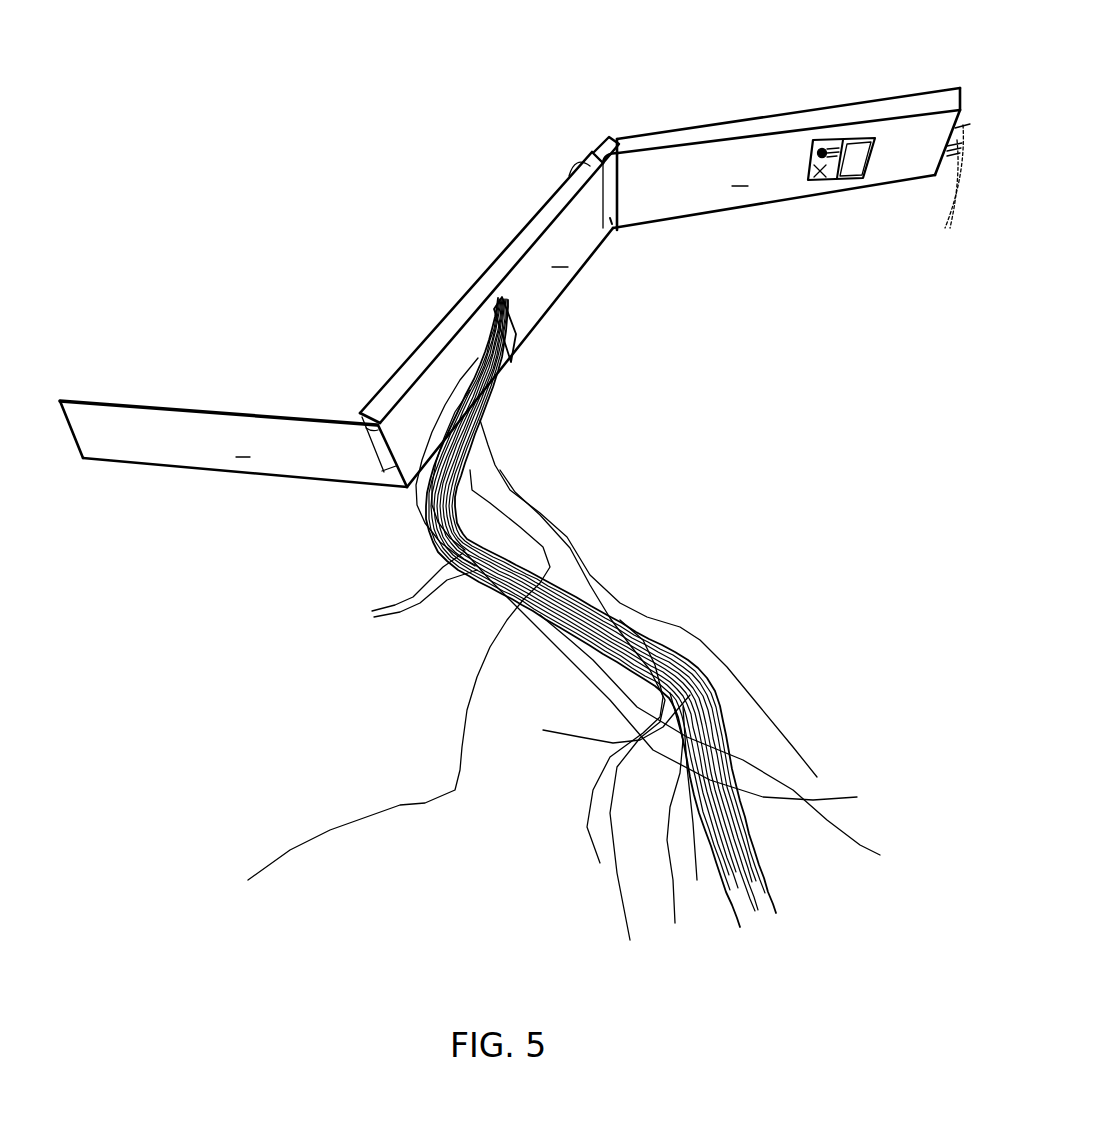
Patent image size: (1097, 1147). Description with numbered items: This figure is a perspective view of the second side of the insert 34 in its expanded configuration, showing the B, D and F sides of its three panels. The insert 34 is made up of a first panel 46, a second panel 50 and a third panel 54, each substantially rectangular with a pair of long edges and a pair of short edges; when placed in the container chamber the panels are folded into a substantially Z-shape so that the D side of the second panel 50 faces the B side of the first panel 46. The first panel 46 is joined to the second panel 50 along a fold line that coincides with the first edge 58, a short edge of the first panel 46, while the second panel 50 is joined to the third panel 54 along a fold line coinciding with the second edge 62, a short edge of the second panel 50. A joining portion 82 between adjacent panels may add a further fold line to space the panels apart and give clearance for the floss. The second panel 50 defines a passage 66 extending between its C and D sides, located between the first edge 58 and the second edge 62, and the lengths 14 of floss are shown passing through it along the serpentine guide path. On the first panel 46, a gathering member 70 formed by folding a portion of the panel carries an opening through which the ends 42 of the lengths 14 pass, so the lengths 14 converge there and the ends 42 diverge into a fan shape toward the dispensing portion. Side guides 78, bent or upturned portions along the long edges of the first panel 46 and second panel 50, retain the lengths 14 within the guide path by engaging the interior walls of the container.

The lengths of floss 14 is at (460, 575).
The insert 34 is at (330, 213).
The ends 42 is at (940, 172).
The first panel 46 is at (656, 167).
The second panel 50 is at (430, 382).
The third panel 54 is at (130, 447).
The first edge 58 is at (620, 202).
The second edge 62 is at (383, 475).
The passage 66 is at (494, 306).
The gathering member 70 is at (822, 182).
The side guides 78 is at (833, 120).
The joining portion 82 is at (612, 222).